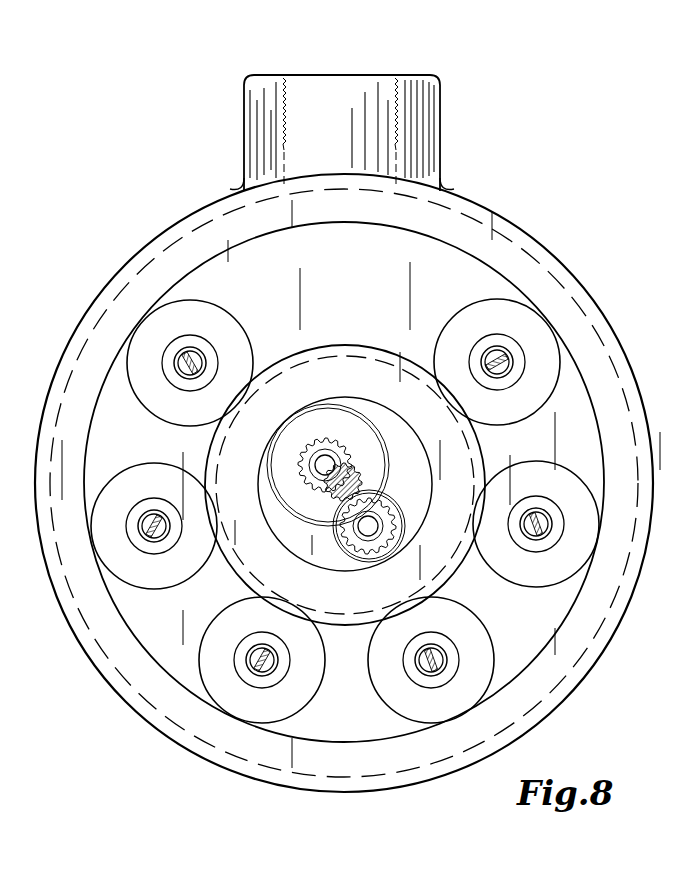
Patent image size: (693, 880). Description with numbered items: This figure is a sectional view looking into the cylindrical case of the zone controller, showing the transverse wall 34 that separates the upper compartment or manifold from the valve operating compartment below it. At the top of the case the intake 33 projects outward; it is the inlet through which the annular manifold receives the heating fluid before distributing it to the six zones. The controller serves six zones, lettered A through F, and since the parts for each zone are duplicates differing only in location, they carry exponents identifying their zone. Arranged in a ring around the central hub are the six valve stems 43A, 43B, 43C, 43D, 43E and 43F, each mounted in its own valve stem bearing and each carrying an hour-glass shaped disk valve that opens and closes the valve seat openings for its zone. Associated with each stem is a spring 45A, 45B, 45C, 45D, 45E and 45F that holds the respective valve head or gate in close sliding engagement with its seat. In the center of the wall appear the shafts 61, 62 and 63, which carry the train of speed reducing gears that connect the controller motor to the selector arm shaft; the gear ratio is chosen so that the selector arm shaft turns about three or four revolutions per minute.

The intake 33 is at (440, 128).
The transverse wall 34 is at (368, 308).
The valve stem 43A is at (199, 357).
The valve stem 43B is at (162, 513).
The valve stem 43C is at (272, 652).
The valve stem 43D is at (433, 645).
The valve stem 43E is at (541, 515).
The valve stem 43F is at (500, 349).
The spring 45A is at (187, 379).
The spring 45B is at (152, 541).
The spring 45C is at (260, 675).
The spring 45D is at (430, 675).
The spring 45E is at (538, 540).
The spring 45F is at (497, 378).
The shaft 61 is at (355, 475).
The shaft 62 is at (369, 530).
The shaft 63 is at (326, 463).